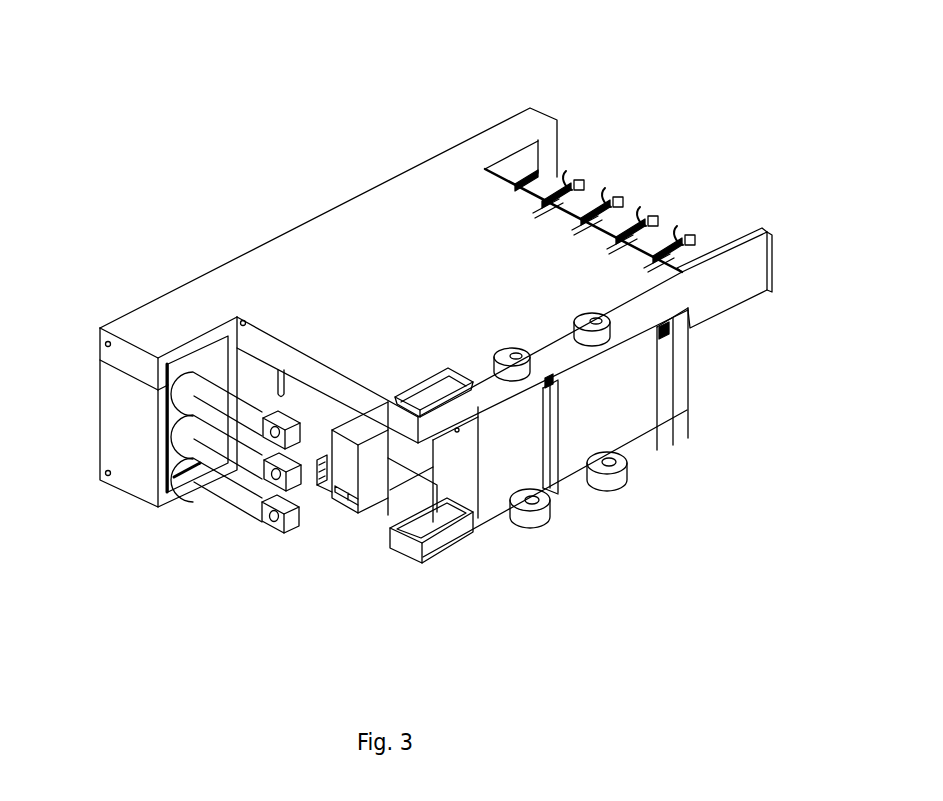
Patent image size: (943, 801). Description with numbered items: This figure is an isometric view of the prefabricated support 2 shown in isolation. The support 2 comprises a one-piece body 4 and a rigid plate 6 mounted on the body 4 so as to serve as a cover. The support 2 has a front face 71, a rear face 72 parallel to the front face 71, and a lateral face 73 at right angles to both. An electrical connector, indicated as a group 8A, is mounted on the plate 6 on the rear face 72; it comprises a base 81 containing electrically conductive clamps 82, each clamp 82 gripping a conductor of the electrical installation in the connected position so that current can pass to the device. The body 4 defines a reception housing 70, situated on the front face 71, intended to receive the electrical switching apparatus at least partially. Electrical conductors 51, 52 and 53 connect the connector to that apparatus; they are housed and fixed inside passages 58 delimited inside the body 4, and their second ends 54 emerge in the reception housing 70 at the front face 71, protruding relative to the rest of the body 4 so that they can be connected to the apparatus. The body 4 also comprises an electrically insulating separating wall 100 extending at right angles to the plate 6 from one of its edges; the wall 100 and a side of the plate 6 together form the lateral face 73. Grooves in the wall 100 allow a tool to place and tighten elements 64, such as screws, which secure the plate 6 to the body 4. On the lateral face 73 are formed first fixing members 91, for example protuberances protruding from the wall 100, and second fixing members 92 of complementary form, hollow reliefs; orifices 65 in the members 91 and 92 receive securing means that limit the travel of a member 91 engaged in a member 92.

The prefabricated support 2 is at (218, 105).
The one-piece body 4 is at (128, 430).
The rigid plate 6 is at (410, 207).
The electrical conductor 51 is at (250, 412).
The electrical conductor 52 is at (241, 430).
The electrical conductor 53 is at (248, 430).
The second ends 54 is at (298, 441).
The passages 58 is at (182, 485).
The elements 64 is at (675, 333).
The orifices 65 is at (594, 316).
The reception housing 70 is at (352, 550).
The front face 71 is at (117, 574).
The rear face 72 is at (779, 156).
The lateral face 73 is at (583, 599).
The base 81 is at (577, 197).
The electrically conductive clamps 82 is at (692, 238).
The contact group 8A is at (719, 80).
The first fixing member 91 is at (593, 477).
The second fixing member 92 is at (575, 303).
The electrically insulating separating wall 100 is at (633, 411).